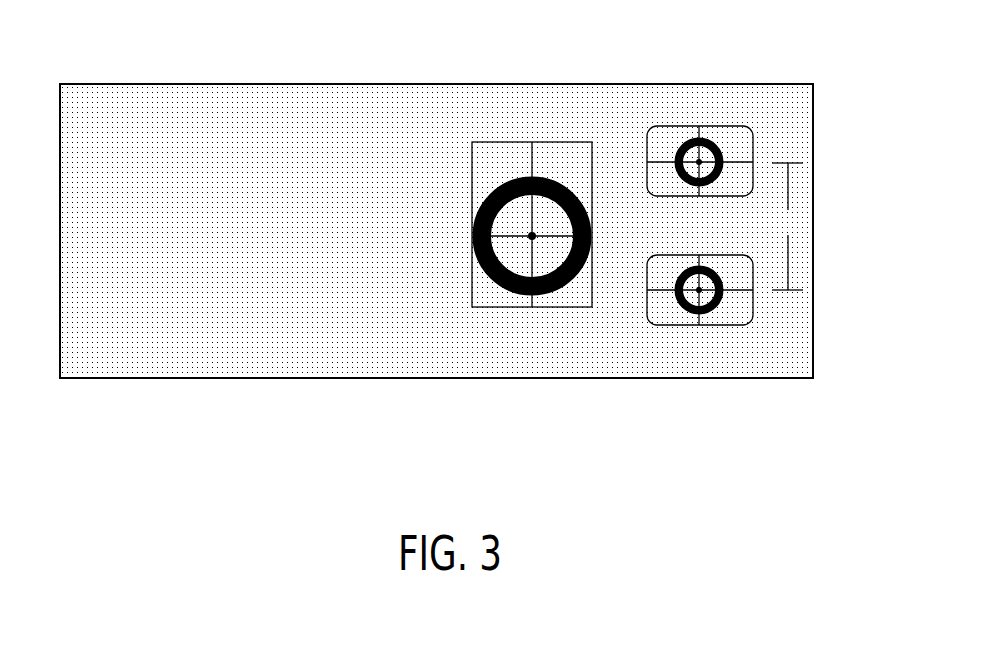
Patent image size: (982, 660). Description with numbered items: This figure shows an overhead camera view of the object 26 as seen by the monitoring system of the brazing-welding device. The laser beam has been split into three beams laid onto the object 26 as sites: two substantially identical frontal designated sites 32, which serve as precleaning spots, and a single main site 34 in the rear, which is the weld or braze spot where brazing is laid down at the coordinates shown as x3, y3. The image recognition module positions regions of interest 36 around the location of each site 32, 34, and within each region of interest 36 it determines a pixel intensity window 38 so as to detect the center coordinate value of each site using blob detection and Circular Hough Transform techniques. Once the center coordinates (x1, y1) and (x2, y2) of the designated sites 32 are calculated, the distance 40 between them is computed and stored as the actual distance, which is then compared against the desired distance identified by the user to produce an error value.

The object 26 is at (261, 420).
The designated sites 32 is at (687, 141).
The main site 34 is at (532, 240).
The regions of interest 36 is at (472, 172).
The pixel intensity window 38 is at (567, 188).
The distance 40 is at (798, 220).